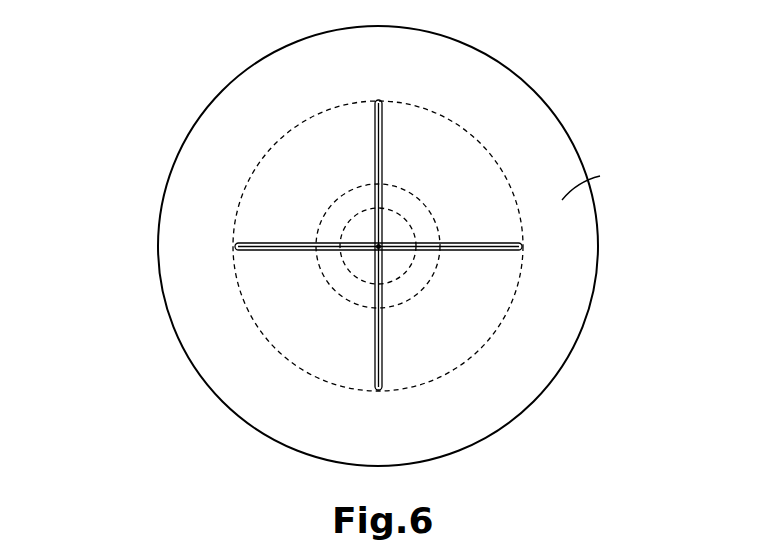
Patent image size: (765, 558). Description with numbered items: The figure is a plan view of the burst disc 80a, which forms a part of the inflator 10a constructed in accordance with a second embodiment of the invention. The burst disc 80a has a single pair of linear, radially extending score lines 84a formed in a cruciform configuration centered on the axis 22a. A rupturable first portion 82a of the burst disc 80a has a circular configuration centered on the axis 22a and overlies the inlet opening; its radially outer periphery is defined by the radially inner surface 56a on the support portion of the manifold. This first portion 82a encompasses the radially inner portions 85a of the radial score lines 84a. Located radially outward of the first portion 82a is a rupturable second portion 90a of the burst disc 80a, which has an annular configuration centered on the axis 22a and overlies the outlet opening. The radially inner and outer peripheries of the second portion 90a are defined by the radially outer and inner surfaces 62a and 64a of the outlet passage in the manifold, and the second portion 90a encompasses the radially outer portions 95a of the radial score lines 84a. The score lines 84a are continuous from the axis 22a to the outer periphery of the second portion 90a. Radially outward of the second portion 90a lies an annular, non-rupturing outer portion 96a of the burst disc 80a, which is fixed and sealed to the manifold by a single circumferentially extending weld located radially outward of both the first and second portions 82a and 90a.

The inflator 10a is at (657, 315).
The axis 22a is at (379, 247).
The radially inner surface 56a is at (400, 213).
The radially outer surface 62a is at (398, 182).
The radially inner surface 64a is at (250, 175).
The burst disc 80a is at (180, 452).
The rupturable first portion 82a is at (402, 231).
The score lines 84a is at (383, 365).
The radially inner portions of the score lines 85a is at (375, 268).
The rupturable second portion 90a is at (335, 125).
The radially outer portions of the score lines 95a is at (373, 140).
The non-rupturing outer portion 96a is at (562, 200).